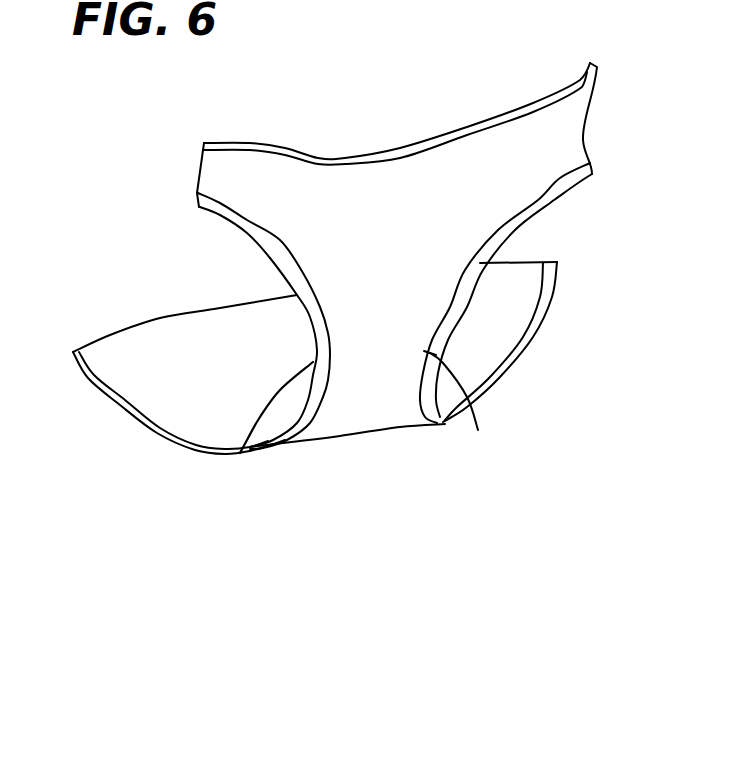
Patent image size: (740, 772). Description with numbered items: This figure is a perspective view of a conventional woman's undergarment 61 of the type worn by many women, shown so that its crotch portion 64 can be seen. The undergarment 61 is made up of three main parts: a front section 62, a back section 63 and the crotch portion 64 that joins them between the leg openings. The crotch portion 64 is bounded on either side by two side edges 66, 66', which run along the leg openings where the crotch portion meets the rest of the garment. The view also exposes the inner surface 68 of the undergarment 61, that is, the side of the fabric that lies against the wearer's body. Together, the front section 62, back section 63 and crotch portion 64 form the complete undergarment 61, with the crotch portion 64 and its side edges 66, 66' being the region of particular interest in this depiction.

The undergarment 61 is at (316, 152).
The front section 62 is at (368, 363).
The back section 63 is at (183, 331).
The crotch portion 64 is at (530, 245).
The side edge 66 is at (481, 416).
The side edge 66' is at (242, 436).
The inner surface 68 is at (165, 374).